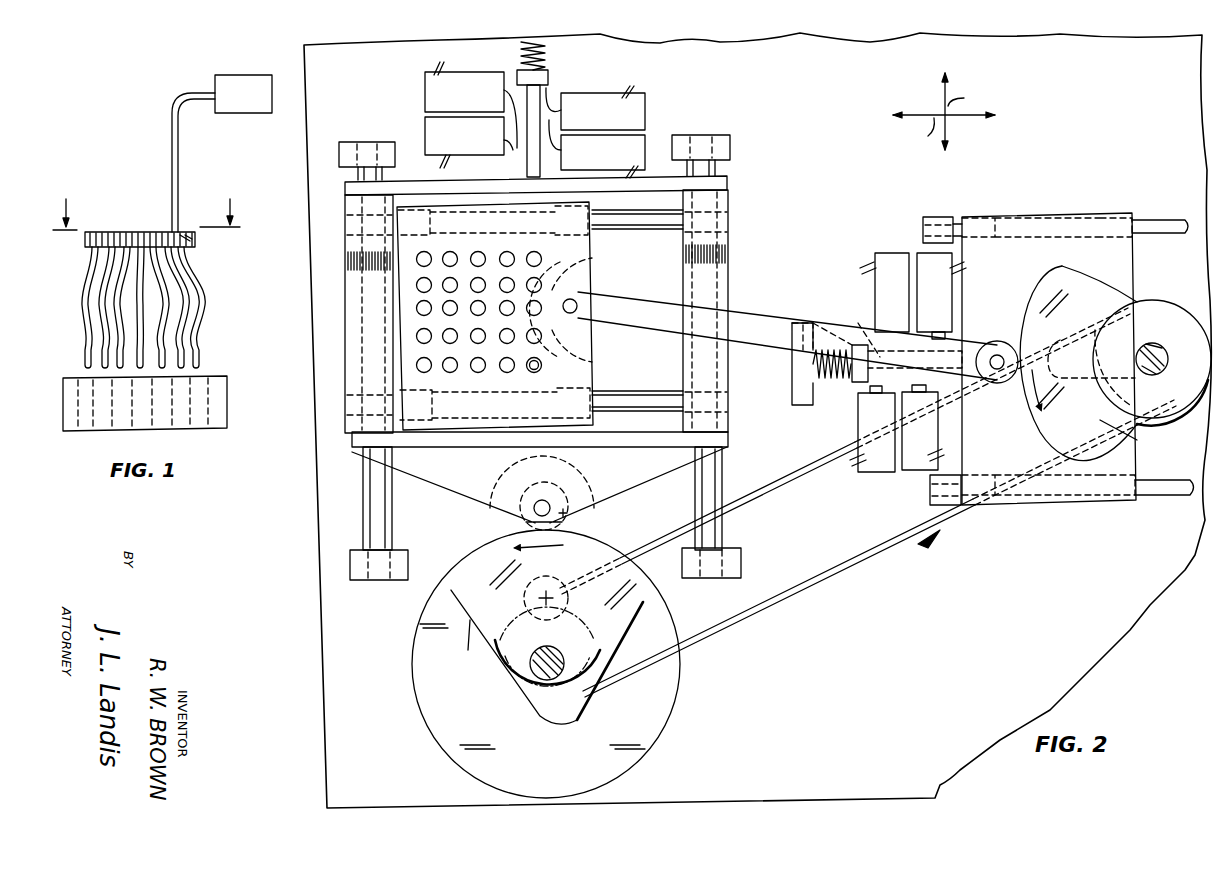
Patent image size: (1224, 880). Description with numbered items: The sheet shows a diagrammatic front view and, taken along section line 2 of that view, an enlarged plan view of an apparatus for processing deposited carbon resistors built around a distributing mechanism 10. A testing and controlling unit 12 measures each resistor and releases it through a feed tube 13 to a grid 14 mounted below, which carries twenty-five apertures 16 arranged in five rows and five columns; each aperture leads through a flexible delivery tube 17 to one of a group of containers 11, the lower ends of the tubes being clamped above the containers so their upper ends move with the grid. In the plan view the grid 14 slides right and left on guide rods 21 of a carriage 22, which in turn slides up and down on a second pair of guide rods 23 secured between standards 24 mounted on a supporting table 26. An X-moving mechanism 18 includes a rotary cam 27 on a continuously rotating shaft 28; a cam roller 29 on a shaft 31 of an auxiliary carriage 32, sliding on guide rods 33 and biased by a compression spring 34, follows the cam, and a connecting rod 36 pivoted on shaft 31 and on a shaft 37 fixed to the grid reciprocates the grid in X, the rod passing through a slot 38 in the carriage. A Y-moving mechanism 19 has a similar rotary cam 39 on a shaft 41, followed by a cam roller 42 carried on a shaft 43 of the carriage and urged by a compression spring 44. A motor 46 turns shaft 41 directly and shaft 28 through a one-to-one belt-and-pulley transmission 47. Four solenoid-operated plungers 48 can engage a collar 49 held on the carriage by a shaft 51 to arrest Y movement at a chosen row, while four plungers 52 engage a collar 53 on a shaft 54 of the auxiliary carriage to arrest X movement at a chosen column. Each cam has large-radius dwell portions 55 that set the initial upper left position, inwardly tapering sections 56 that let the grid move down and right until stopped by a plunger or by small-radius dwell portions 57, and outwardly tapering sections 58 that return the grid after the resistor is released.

In FIG. 1, the section line 2— 2 is at (146, 206).
In FIG. 1, the distributing mechanism 10 is at (148, 203).
In FIG. 2, the distributing mechanism 10 is at (853, 143).
In FIG. 1, the containers 11 is at (137, 430).
In FIG. 1, the testing and controlling unit 12 is at (236, 73).
In FIG. 1, the feed tube 13 is at (180, 152).
In FIG. 2, the feed tube 13 is at (541, 368).
In FIG. 1, the grid 14 is at (105, 232).
In FIG. 2, the grid 14 is at (592, 378).
In FIG. 1, the apertures 16 is at (184, 246).
In FIG. 2, the apertures 16 is at (455, 370).
In FIG. 1, the delivery tubes 17 is at (181, 322).
In FIG. 2, the X-moving mechanism 18 is at (1045, 278).
In FIG. 2, the Y-moving mechanism 19 is at (468, 652).
In FIG. 2, the guide rods 21 is at (644, 232).
In FIG. 2, the carriage 22 is at (650, 458).
In FIG. 2, the guide rods 23 is at (363, 500).
In FIG. 2, the standards 24 is at (352, 142).
In FIG. 2, the supporting table 26 is at (322, 645).
In FIG. 2, the rotary cam 27 is at (1092, 282).
In FIG. 2, the shaft 28 is at (1145, 348).
In FIG. 2, the cam roller 29 is at (990, 350).
In FIG. 2, the shaft 31 is at (999, 357).
In FIG. 2, the auxiliary carriage 32 is at (1018, 505).
In FIG. 2, the guide rods 33 is at (1160, 222).
In FIG. 2, the compression spring 34 is at (832, 380).
In FIG. 2, the connecting rod 36 is at (773, 320).
In FIG. 2, the shaft 37 is at (576, 302).
In FIG. 2, the slot 38 is at (712, 255).
In FIG. 2, the rotary cam 39 is at (628, 618).
In FIG. 2, the shaft 41 is at (535, 678).
In FIG. 2, the cam roller 42 is at (570, 516).
In FIG. 2, the shaft 43 is at (548, 504).
In FIG. 2, the compression spring 44 is at (520, 53).
In FIG. 2, the motor 46 is at (428, 728).
In FIG. 2, the belt-and-pulley transmission 47 is at (840, 577).
In FIG. 2, the solenoid-operated plungers 48 is at (549, 96).
In FIG. 2, the collar 49 is at (548, 78).
In FIG. 2, the shaft 51 is at (527, 172).
In FIG. 2, the solenoid-operated plungers 52 is at (896, 327).
In FIG. 2, the collar 53 is at (832, 335).
In FIG. 2, the shaft 54 is at (862, 330).
In FIG. 2, the large-radius dwell portions 55 is at (1022, 400).
In FIG. 2, the inwardly tapering sections 56 is at (1120, 300).
In FIG. 2, the small-radius dwell portions 57 is at (1178, 398).
In FIG. 2, the outwardly tapering cam sections 58 is at (1128, 445).